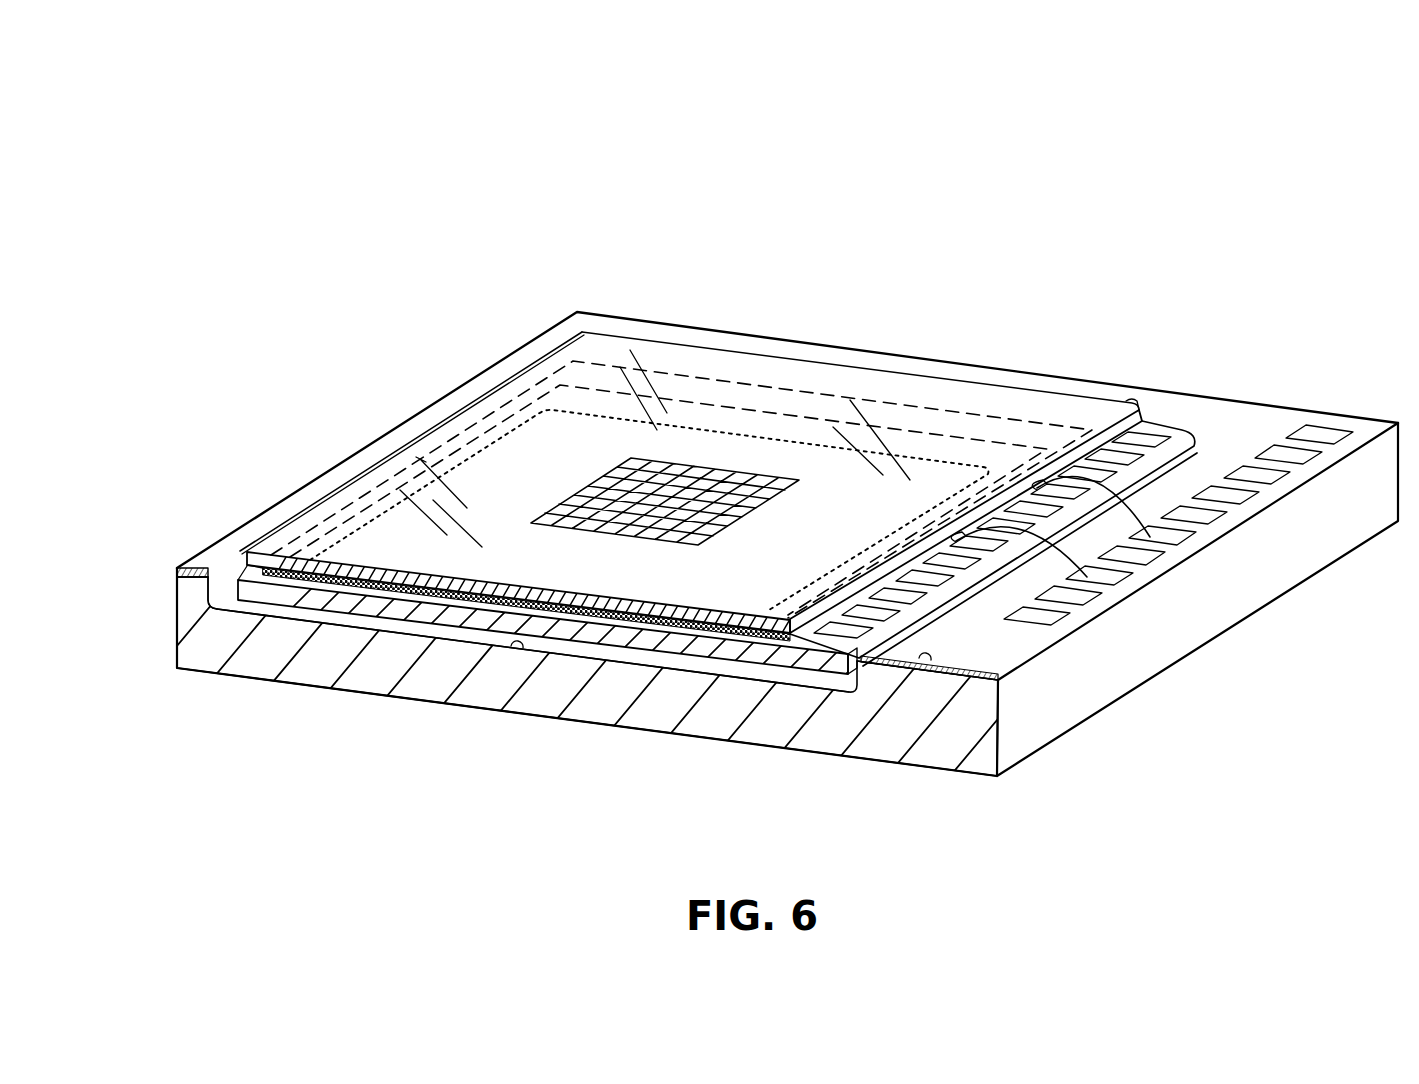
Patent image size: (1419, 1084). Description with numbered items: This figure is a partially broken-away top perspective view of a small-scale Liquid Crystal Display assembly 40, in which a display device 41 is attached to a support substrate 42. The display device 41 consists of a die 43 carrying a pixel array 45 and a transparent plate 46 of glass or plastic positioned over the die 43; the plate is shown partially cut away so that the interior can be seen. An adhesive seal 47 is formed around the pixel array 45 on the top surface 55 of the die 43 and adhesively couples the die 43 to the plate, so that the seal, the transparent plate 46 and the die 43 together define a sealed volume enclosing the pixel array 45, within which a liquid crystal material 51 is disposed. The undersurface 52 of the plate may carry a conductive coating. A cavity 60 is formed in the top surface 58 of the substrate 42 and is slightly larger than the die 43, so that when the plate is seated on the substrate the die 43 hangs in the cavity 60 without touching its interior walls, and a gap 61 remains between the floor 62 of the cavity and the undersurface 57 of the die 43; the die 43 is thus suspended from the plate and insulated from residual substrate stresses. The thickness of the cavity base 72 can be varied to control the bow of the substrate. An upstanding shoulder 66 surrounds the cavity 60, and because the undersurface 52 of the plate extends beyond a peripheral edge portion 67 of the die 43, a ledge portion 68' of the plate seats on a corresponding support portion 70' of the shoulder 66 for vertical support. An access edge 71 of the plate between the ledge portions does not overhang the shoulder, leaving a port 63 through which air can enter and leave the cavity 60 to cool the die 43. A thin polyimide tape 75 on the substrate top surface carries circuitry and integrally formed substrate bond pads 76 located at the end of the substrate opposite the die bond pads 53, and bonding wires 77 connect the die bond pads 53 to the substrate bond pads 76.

The Liquid Crystal Display (LCD) assembly 40 is at (1034, 176).
The display device 41 is at (574, 320).
The support substrate 42 is at (1030, 766).
The die 43 is at (1160, 426).
The pixel array 45 is at (775, 493).
The transparent plate 46 is at (975, 368).
The adhesive seal 47 is at (846, 422).
The liquid crystal material 51 is at (342, 570).
The undersurface 52 is at (503, 590).
The die bond pads 53 is at (906, 602).
The top surface 55 is at (833, 648).
The undersurface 57 is at (433, 628).
The top surface 58 is at (192, 566).
The cavity 60 is at (228, 588).
The gap 61 is at (593, 650).
The floor 62 is at (517, 648).
The port 63 is at (316, 500).
The upstanding shoulder 66 is at (165, 572).
The peripheral edge portion 67 is at (738, 382).
The ledge portion 68' is at (1153, 343).
The support portion 70' is at (860, 335).
The access edge 71 is at (432, 428).
The cavity base 72 is at (214, 648).
The polyimide tape 75 is at (250, 526).
The substrate bond pads 76 is at (1022, 636).
The bonding wires 77 is at (1072, 548).